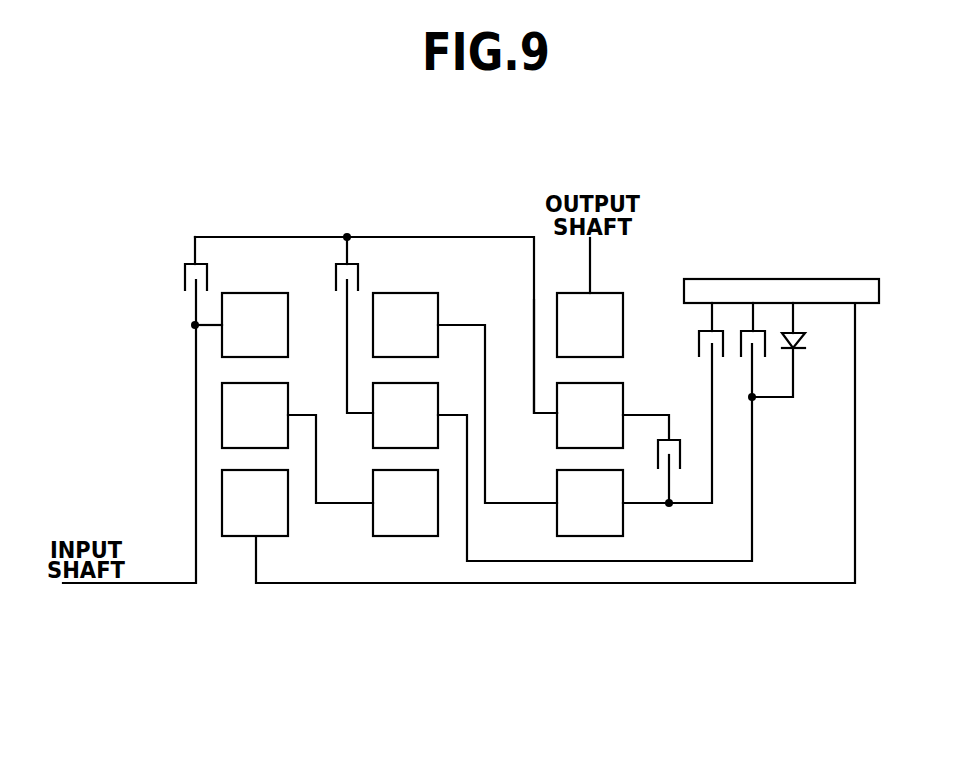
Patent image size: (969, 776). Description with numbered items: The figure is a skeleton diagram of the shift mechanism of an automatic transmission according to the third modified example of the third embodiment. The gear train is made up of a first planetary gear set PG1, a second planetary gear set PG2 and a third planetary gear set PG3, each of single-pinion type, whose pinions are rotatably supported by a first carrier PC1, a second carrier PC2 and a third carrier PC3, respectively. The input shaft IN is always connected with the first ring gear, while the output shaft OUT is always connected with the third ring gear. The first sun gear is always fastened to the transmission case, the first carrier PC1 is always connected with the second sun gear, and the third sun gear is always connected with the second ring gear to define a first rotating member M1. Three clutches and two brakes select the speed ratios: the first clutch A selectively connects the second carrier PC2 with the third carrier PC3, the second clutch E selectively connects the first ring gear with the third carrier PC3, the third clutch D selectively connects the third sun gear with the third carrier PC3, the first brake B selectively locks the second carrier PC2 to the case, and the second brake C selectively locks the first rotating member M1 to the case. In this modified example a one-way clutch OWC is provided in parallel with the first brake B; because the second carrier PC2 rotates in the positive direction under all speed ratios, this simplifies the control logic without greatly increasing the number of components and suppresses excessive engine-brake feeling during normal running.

The input shaft IN is at (125, 585).
The output shaft OUT is at (590, 250).
The second clutch E is at (193, 263).
The first clutch A is at (345, 263).
The first brake B is at (754, 330).
The second brake C is at (712, 330).
The third clutch D is at (683, 453).
The one-way clutch OWC is at (805, 343).
The first carrier PC1 is at (302, 413).
The second carrier PC2 is at (362, 415).
The third carrier PC3 is at (545, 418).
The first rotating member M1 is at (486, 355).
The first planetary gear set PG1 is at (240, 537).
The second planetary gear set PG2 is at (403, 537).
The third planetary gear set PG3 is at (590, 537).